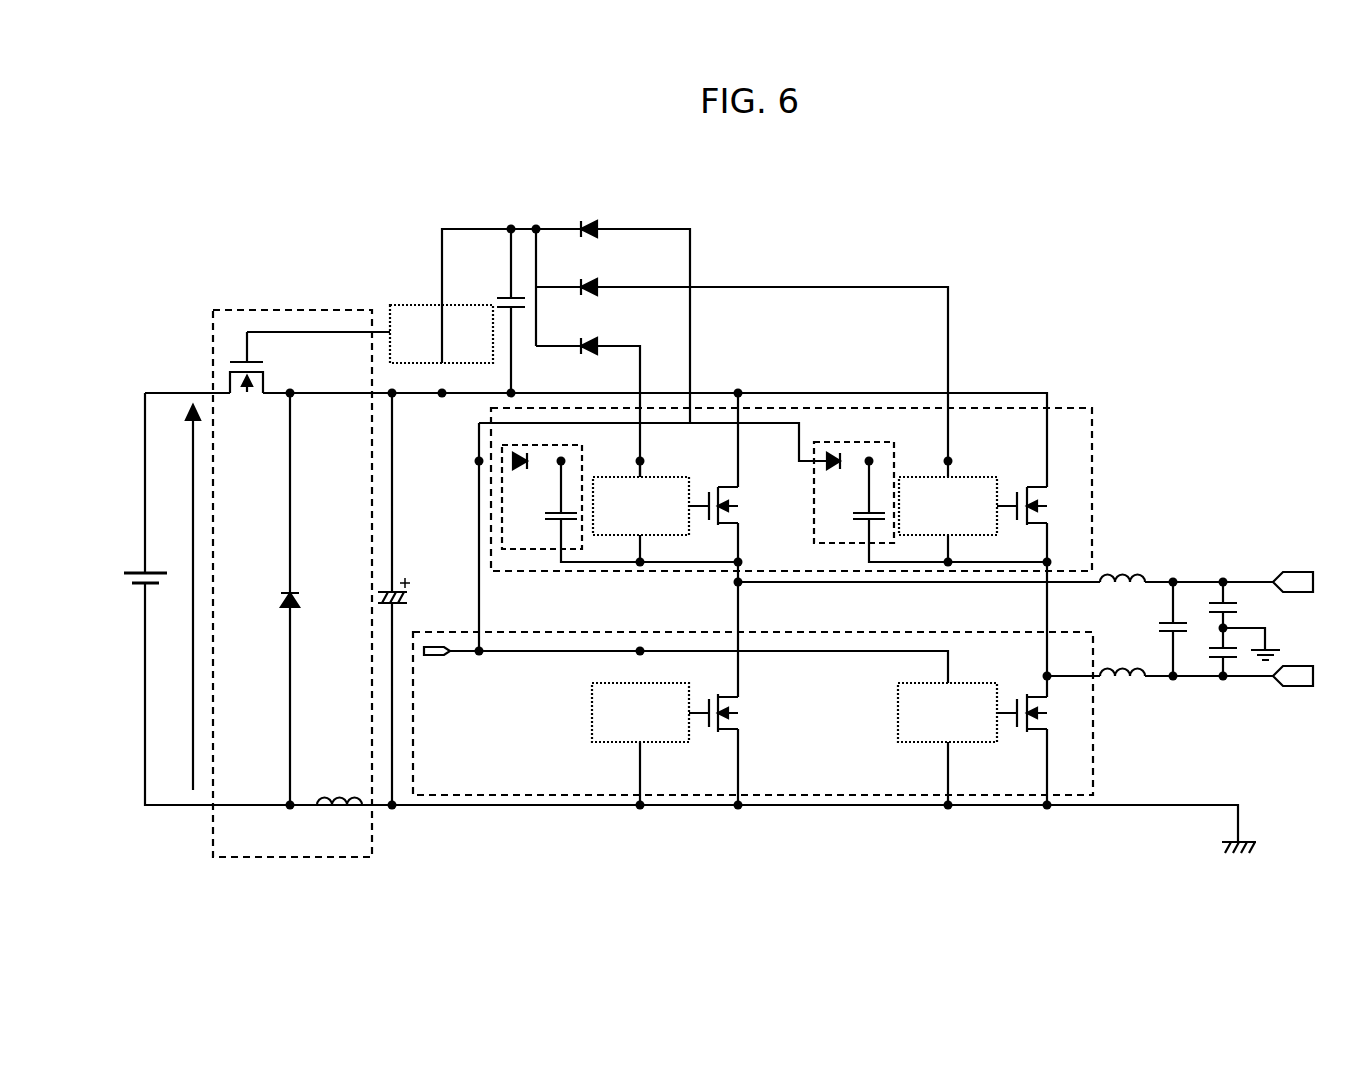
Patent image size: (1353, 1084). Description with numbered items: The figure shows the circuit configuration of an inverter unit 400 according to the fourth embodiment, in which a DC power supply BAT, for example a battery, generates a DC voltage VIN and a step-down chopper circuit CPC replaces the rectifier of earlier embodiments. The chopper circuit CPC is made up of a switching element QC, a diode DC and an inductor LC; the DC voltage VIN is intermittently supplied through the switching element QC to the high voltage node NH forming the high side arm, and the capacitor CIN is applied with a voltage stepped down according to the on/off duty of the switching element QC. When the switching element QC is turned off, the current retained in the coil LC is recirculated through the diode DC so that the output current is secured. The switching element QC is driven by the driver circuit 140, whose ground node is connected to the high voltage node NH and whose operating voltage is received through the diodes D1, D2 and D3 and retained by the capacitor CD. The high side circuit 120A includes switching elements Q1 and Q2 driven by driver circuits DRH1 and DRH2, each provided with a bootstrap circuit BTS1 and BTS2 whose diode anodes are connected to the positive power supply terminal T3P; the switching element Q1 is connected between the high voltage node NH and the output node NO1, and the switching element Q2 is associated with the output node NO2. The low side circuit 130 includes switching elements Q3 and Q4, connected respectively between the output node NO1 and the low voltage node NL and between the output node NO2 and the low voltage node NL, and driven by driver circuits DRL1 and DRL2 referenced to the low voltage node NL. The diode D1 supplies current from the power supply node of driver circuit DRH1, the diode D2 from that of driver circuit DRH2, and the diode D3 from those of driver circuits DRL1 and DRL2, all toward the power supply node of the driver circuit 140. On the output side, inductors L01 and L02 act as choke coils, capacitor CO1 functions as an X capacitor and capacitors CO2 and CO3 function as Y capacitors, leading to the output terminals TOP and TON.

The inverter unit 400 is at (1193, 209).
The step-down chopper circuit CPC is at (297, 308).
The driver circuit 140 is at (410, 305).
The capacitor CD is at (506, 296).
The diode D1 is at (606, 339).
The diode D2 is at (606, 280).
The diode D3 is at (606, 222).
The switching element QC is at (245, 400).
The DC power supply BAT is at (135, 570).
The DC voltage VIN is at (176, 597).
The diode DC is at (282, 600).
The high voltage node NH is at (466, 398).
The capacitor CIN is at (414, 596).
The high side circuit 120A is at (1070, 405).
The bootstrap circuit BTS1 is at (555, 447).
The driver circuit DRH1 is at (680, 477).
The switching element Q1 is at (744, 500).
The bootstrap circuit BTS2 is at (855, 443).
The driver circuit DRH2 is at (988, 477).
The switching element Q2 is at (1052, 500).
The output node NO1 is at (733, 585).
The output node NO2 is at (1043, 598).
The low side circuit 130 is at (1093, 765).
The positive power supply terminal T3P is at (434, 658).
The driver circuit DRL1 is at (604, 742).
The driver circuit DRL2 is at (975, 683).
The switching element Q3 is at (752, 712).
The switching element Q4 is at (1052, 712).
The inductor L01 is at (1138, 572).
The inductor L02 is at (1134, 684).
The capacitor CO1 is at (1158, 628).
The capacitor CO2 is at (1240, 605).
The capacitor CO3 is at (1235, 660).
The output terminal TOP is at (1300, 572).
The output terminal TON is at (1300, 688).
The low voltage node NL is at (493, 810).
The inductor LC is at (338, 808).